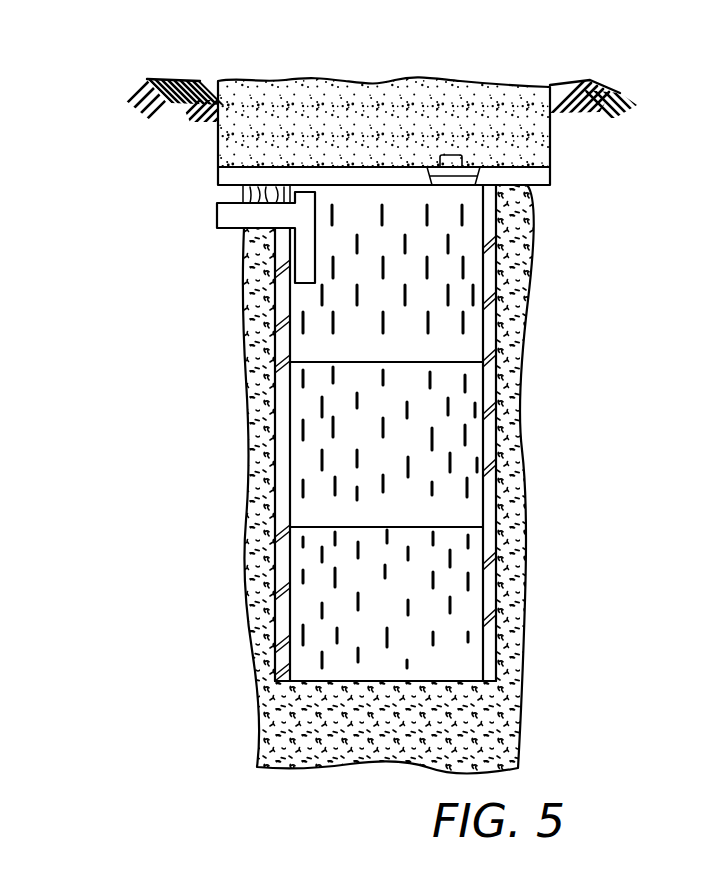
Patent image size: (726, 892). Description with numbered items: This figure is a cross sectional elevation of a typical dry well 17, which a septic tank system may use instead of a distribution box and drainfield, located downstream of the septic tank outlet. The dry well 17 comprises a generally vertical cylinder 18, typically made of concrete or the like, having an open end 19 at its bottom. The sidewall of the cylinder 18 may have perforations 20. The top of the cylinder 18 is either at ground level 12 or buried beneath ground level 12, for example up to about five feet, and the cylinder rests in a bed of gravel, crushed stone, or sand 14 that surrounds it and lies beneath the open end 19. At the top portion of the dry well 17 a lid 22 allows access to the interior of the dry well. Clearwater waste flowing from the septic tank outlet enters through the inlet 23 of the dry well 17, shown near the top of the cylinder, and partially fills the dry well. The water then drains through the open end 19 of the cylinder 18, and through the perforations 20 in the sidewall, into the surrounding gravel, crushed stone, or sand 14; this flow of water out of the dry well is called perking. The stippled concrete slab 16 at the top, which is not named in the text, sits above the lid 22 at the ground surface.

The ground level 12 is at (262, 77).
The bed of gravel, crushed stone, or sand 14 is at (522, 480).
The concrete pad surface 16 is at (377, 92).
The dry well 17 is at (626, 171).
The cylinder 18 is at (490, 335).
The open end 19 is at (430, 680).
The perforations 20 is at (493, 243).
The lid 22 is at (233, 173).
The inlet 23 is at (229, 213).